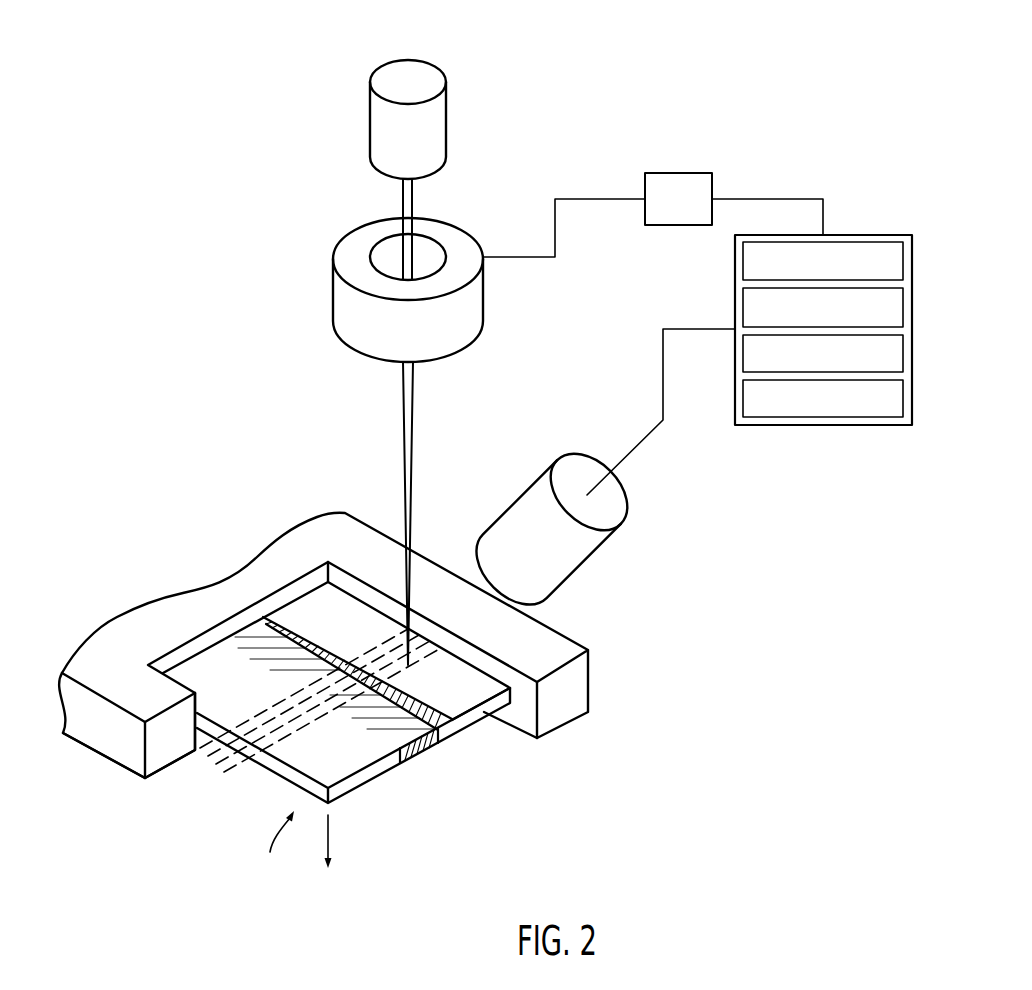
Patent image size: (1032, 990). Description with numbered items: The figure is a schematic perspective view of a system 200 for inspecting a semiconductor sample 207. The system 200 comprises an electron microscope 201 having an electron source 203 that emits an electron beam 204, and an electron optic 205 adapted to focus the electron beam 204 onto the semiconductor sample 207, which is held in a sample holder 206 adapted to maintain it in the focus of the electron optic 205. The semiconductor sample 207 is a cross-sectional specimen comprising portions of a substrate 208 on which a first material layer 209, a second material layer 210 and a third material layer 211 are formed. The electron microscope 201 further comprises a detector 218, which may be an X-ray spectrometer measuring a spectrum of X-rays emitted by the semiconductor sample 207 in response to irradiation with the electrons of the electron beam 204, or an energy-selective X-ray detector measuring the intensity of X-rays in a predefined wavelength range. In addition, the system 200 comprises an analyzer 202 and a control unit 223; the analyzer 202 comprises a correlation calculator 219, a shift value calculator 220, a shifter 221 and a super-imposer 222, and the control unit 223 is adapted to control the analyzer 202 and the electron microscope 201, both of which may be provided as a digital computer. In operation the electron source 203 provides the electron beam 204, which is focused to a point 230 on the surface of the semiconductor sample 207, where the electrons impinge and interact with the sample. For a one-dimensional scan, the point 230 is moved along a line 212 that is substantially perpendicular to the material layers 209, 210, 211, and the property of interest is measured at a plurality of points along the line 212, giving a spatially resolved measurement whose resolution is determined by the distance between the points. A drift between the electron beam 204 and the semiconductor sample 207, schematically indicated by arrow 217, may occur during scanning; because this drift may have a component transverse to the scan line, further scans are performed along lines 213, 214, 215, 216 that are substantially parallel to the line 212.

The system for inspecting a semiconductor sample 200 is at (300, 46).
The electron microscope 201 is at (276, 318).
The analyzer 202 is at (893, 235).
The electron source 203 is at (438, 122).
The electron beam 204 is at (414, 194).
The electron optic 205 is at (484, 283).
The sample holder 206 is at (588, 683).
The semiconductor sample 207 is at (267, 847).
The substrate 208 is at (362, 783).
The first material layer 209 is at (416, 757).
The second material layer 210 is at (452, 740).
The third material layer 211 is at (482, 713).
The line 212 is at (223, 772).
The line 213 is at (217, 763).
The line 214 is at (210, 758).
The line 215 is at (200, 750).
The line 216 is at (190, 745).
The arrow 217 is at (330, 840).
The detector 218 is at (590, 553).
The correlation calculator 219 is at (843, 275).
The shift value calculator 220 is at (843, 318).
The shifter 221 is at (843, 363).
The super-imposer 222 is at (843, 408).
The control unit 223 is at (692, 173).
The point 230 is at (410, 664).